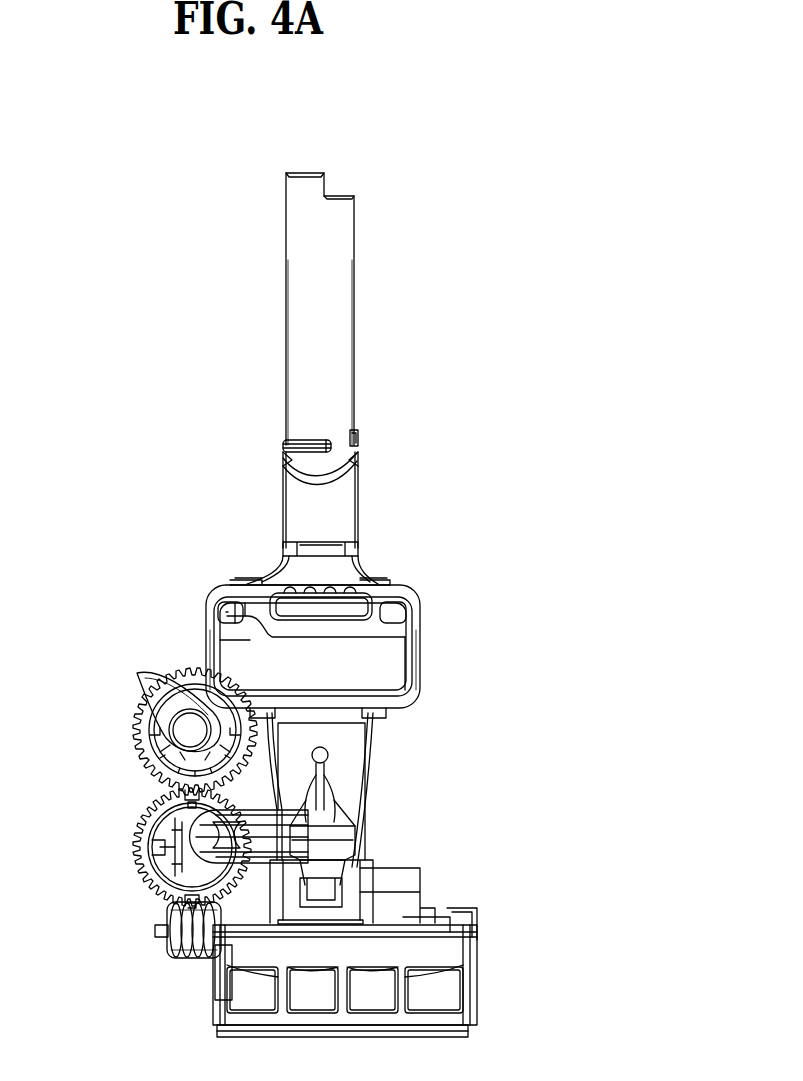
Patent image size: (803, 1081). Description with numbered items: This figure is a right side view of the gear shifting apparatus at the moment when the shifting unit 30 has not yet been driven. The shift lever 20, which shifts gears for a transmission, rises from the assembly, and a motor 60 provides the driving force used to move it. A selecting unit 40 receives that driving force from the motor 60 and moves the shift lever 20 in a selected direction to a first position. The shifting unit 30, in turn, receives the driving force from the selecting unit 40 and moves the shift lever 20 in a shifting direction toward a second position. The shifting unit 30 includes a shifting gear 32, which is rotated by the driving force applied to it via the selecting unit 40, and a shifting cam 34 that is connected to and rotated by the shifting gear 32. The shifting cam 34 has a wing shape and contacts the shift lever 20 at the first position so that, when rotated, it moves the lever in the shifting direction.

The shift lever 20 is at (393, 592).
The shifting unit 30 is at (170, 660).
The shifting gear 32 is at (142, 753).
The shifting cam 34 is at (160, 712).
The selecting unit 40 is at (153, 887).
The motor 60 is at (177, 957).